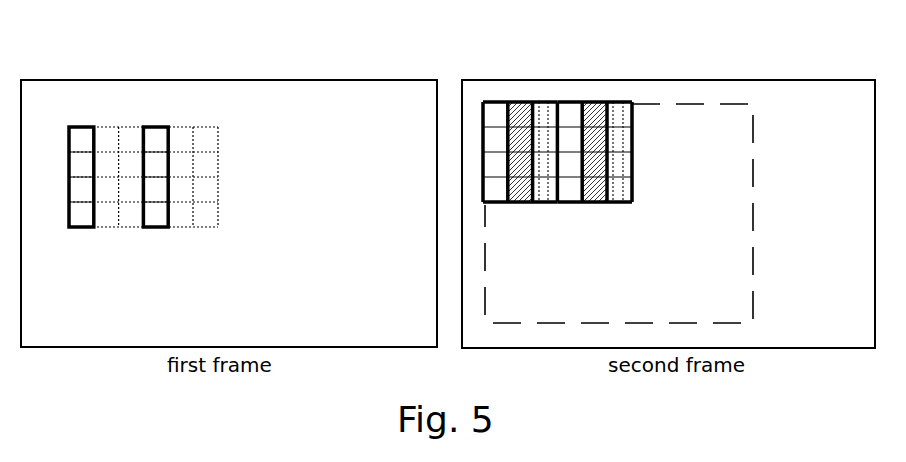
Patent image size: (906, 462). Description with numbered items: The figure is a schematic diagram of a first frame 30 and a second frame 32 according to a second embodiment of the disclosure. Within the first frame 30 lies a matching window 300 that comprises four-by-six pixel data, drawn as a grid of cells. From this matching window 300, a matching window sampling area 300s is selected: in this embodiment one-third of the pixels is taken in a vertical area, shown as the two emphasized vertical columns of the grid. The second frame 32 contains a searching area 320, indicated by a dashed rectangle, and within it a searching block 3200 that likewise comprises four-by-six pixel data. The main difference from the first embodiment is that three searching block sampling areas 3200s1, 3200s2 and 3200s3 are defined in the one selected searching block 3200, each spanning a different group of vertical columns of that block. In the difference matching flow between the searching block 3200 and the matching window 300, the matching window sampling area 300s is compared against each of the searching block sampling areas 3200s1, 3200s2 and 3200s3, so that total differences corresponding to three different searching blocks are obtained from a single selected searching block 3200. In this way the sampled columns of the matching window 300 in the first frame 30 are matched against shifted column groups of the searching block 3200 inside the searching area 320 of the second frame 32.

The first frame 30 is at (277, 80).
The second frame 32 is at (762, 80).
The matching window 300 is at (153, 180).
The matching window sampling area 300s is at (158, 127).
The searching area 320 is at (756, 183).
The searching block 3200 is at (584, 147).
The first searching block sampling area 3200s1 is at (567, 102).
The second searching block sampling area 3200s2 is at (600, 205).
The third searching block sampling area 3200s3 is at (620, 102).